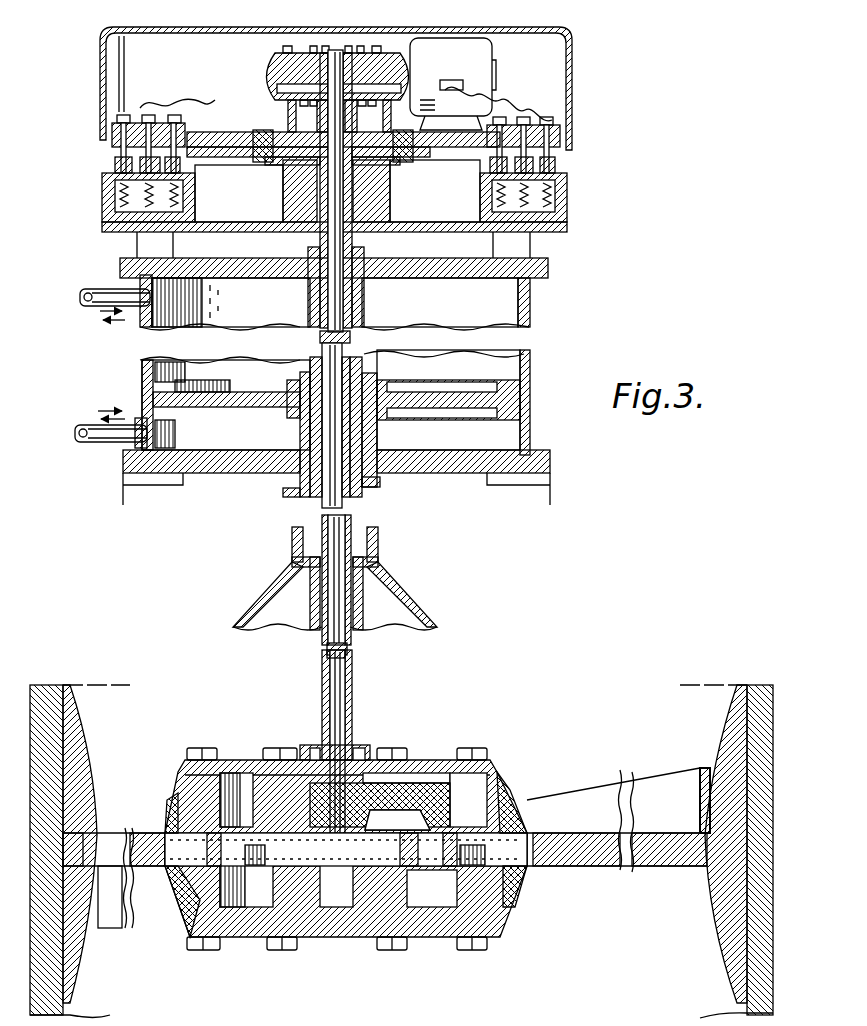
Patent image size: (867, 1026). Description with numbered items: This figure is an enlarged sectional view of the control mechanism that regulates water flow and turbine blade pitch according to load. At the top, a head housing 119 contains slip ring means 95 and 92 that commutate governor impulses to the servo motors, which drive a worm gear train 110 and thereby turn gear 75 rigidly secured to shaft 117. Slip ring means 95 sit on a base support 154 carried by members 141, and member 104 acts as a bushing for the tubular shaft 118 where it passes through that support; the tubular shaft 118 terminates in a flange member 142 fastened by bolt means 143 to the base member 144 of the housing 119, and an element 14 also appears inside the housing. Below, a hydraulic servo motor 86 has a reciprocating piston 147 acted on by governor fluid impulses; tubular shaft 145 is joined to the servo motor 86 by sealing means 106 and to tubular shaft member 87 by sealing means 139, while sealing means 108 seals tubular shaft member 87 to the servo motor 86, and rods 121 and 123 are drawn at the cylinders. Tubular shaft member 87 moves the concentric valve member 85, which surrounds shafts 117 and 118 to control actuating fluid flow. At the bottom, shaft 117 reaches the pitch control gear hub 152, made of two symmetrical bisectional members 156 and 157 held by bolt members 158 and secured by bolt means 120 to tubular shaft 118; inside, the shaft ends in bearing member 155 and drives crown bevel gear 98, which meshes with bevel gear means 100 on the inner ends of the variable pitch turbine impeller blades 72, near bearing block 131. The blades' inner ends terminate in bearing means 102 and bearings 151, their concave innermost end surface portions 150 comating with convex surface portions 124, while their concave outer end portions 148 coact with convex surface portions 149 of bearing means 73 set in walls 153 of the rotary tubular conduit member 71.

The motor 14 is at (485, 63).
The rotary tubular conduit member 71 is at (58, 688).
The variable pitch turbine impeller blades 72 is at (620, 790).
The bearing means 73 is at (93, 785).
The gear 75 is at (270, 56).
The valve member 85 is at (408, 590).
The servo motor 86 is at (532, 300).
The tubular shaft member 87 is at (300, 494).
The slip ring means 92 is at (110, 120).
The slip ring means 95 is at (100, 185).
The crown bevel gear 98 is at (237, 758).
The bevel gear means 100 is at (276, 945).
The bearing means 102 is at (508, 810).
The member (bushing or bearing means) 104 is at (357, 232).
The sealing means 106 is at (308, 249).
The sealing means 108 is at (382, 490).
The worm gear train 110 is at (352, 43).
The shaft 117 is at (335, 50).
The tubular shaft 118 is at (318, 305).
The housing (head member) 119 is at (100, 75).
The bolt means 120 is at (362, 740).
The piston rod 121 is at (86, 302).
The lower piston rod 123 is at (82, 426).
The external arcuate convex surface portions 124 is at (156, 796).
The bearing block 131 is at (428, 795).
The sealing means 139 is at (378, 373).
The members 141 is at (140, 245).
The flange member 142 is at (425, 162).
The bolt means 143 is at (258, 162).
The base member 144 is at (240, 134).
The tubular shaft 145 is at (364, 308).
The piston 147 is at (238, 380).
The outer circumferential end portions 148 is at (703, 785).
The arcuately convex external surface portions 149 is at (85, 740).
The innermost central end surface portions 150 is at (540, 815).
The bearings 151 is at (150, 830).
The pitch control gear hub 152 is at (256, 753).
The walls 153 is at (70, 1012).
The base support 154 is at (430, 232).
The bearing member 155 is at (355, 938).
The bisectional member 156 is at (490, 780).
The bisectional member 157 is at (505, 920).
The bolt members 158 is at (195, 752).